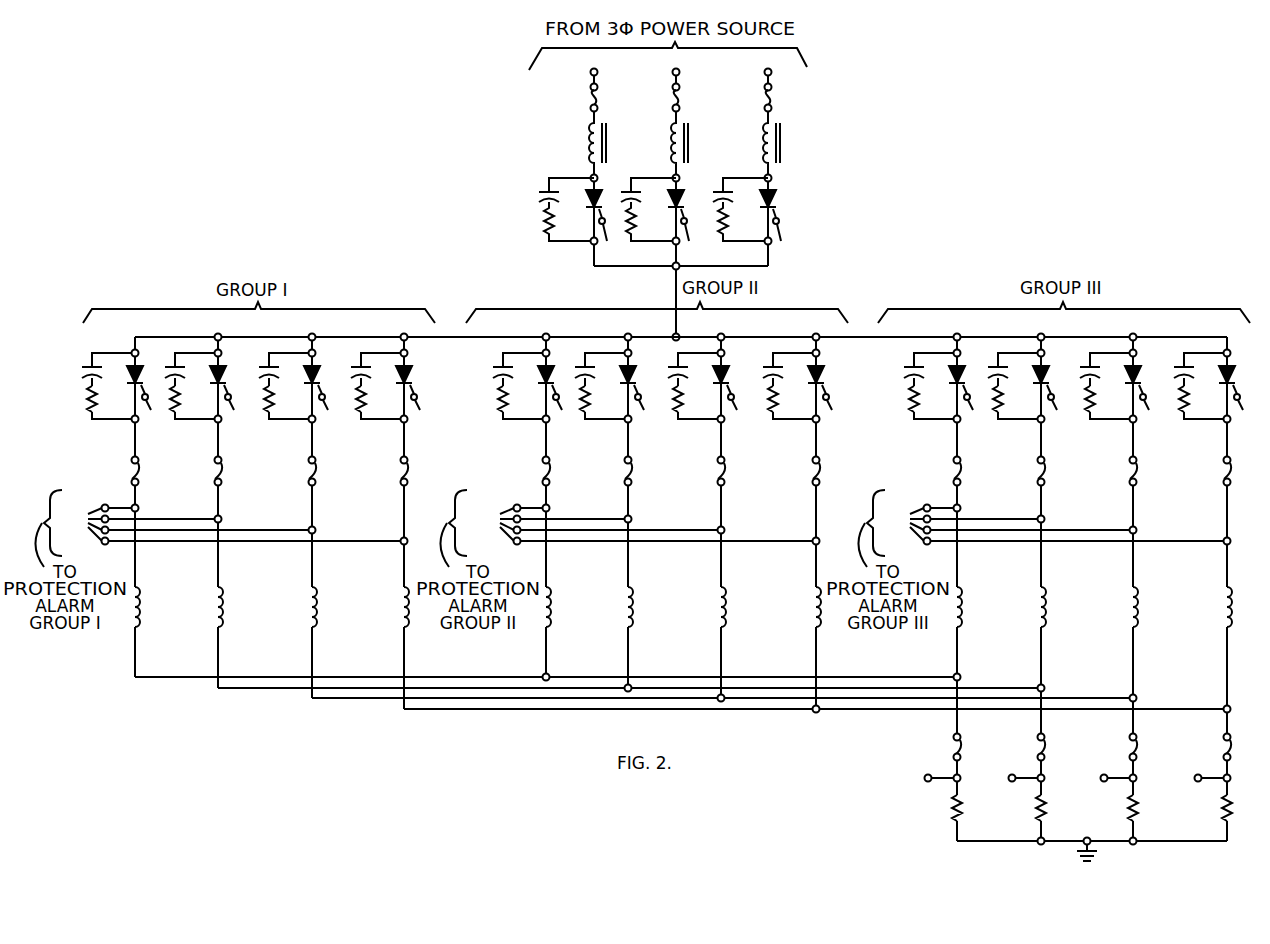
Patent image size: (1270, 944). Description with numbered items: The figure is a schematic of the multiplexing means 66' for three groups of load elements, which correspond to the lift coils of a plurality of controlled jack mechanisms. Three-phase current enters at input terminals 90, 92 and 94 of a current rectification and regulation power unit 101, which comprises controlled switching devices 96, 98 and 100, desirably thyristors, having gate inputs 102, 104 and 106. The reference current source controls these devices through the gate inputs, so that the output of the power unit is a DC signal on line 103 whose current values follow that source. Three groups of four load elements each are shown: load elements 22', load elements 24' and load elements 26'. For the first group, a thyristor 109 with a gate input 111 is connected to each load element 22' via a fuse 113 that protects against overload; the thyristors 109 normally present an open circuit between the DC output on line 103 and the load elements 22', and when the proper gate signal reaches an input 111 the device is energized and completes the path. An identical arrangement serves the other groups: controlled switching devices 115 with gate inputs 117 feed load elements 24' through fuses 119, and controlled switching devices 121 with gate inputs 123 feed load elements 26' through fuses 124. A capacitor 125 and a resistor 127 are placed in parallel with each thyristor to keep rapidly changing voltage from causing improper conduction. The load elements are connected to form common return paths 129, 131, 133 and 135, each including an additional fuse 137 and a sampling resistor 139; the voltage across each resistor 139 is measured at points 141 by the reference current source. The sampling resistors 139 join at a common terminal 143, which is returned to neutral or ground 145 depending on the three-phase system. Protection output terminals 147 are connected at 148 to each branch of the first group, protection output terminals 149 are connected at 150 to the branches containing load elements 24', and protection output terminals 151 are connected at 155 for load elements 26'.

The input terminal 90 is at (591, 72).
The input terminal 92 is at (673, 72).
The input terminal 94 is at (765, 72).
The controlled switching device 96 is at (601, 198).
The controlled switching device 98 is at (683, 198).
The controlled switching device 100 is at (777, 198).
The current rectification and regulation power unit 101 is at (842, 222).
The gate input 102 is at (611, 250).
The gate input 104 is at (693, 250).
The gate input 106 is at (788, 250).
The line 103 is at (672, 278).
The multiplexing means 66' is at (621, 348).
The controlled switching device 109 is at (123, 382).
The gate input 111 is at (293, 408).
The fuse 113 is at (157, 471).
The controlled switching device 115 is at (534, 382).
The gate input 117 is at (564, 414).
The fuse 119 is at (536, 467).
The controlled switching device 121 is at (946, 382).
The gate input 123 is at (976, 414).
The fuse 124 is at (954, 467).
The capacitor 125 is at (87, 376).
The resistor 127 is at (86, 416).
The load element 22' is at (272, 603).
The load element 24' is at (683, 603).
The load element 26' is at (1094, 603).
The common return path 129 is at (955, 722).
The common return path 131 is at (1040, 722).
The common return path 133 is at (1132, 722).
The common return path 135 is at (1226, 722).
The fuse 137 is at (1038, 750).
The sampling resistor 139 is at (1040, 811).
The point 141 is at (924, 778).
The common terminal 143 is at (1068, 832).
The neutral or ground 145 is at (1098, 858).
The protection output terminal 147 is at (71, 528).
The connection point 148 is at (216, 519).
The protection output terminal 149 is at (480, 528).
The connection point 150 is at (628, 519).
The protection output terminal 151 is at (894, 528).
The connection point 155 is at (1042, 519).